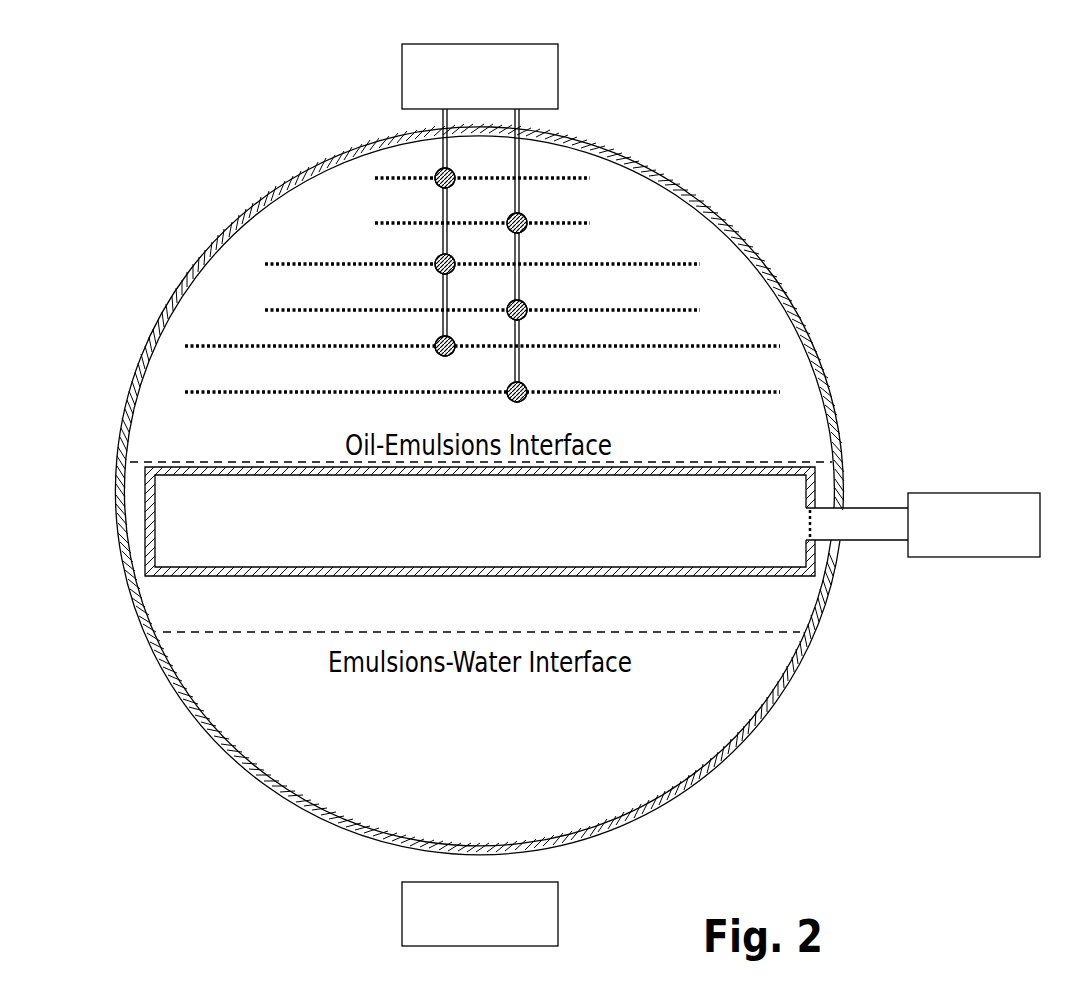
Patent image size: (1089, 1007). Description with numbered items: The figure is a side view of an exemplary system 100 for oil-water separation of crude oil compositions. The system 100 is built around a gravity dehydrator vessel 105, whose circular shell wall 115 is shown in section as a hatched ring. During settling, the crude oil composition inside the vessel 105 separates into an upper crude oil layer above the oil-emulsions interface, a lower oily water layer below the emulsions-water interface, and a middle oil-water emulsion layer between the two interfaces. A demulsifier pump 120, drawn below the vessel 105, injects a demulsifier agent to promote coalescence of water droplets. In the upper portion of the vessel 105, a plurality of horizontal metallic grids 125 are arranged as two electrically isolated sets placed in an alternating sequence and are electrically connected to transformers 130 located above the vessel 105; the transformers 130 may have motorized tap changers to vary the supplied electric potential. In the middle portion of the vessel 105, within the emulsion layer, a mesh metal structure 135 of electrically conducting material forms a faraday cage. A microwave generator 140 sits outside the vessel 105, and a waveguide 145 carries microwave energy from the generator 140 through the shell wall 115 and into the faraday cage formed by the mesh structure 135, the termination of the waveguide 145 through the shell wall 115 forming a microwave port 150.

The system 100 is at (130, 742).
The gravity dehydrator vessel 105 is at (479, 489).
The shell wall 115 is at (743, 737).
The demulsifier pump 120 is at (558, 903).
The metallic grids 125 is at (302, 260).
The transformers 130 is at (558, 80).
The mesh metal structure 135 is at (735, 557).
The microwave generator 140 is at (995, 557).
The waveguide 145 is at (860, 503).
The microwave port 150 is at (827, 548).